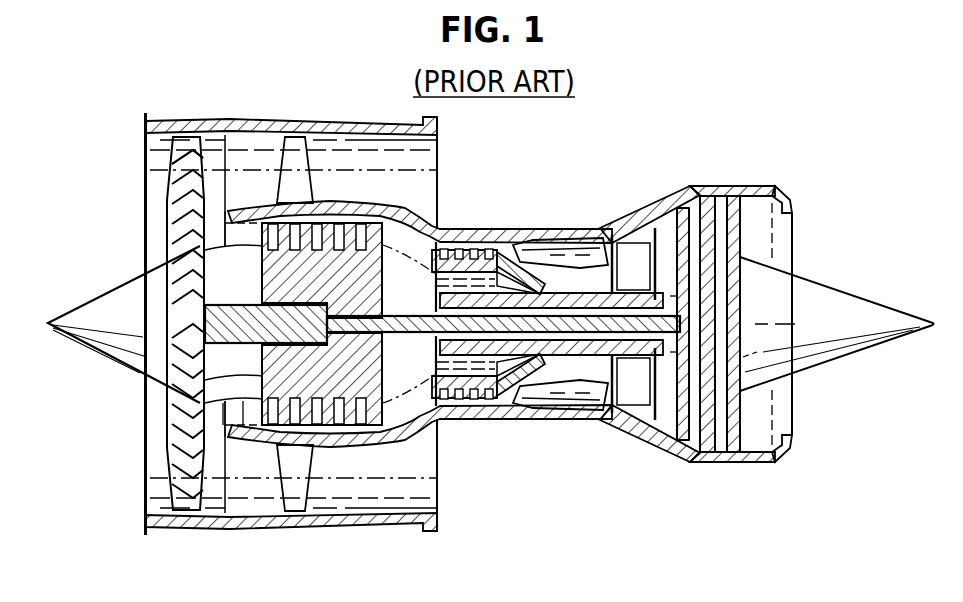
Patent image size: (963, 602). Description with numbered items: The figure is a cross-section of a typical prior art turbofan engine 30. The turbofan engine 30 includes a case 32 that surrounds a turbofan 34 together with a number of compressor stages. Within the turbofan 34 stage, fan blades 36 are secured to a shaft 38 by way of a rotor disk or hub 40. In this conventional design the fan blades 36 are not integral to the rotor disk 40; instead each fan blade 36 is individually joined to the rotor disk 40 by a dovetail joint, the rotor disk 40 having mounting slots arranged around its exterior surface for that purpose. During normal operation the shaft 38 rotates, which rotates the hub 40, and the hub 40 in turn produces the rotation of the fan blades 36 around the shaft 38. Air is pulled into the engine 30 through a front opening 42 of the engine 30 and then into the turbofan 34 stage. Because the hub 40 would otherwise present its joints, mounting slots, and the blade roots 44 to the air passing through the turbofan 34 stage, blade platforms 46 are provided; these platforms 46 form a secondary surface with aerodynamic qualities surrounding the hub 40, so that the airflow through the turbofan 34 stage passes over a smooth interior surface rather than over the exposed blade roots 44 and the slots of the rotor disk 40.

The turbofan engine 30 is at (624, 119).
The case 32 is at (172, 124).
The turbofan 34 is at (187, 262).
The fan blade 36 is at (175, 478).
The shaft 38 is at (230, 335).
The rotor disk or hub 40 is at (148, 303).
The front opening 42 is at (78, 374).
The blade root 44 is at (170, 147).
The blade platform 46 is at (172, 173).